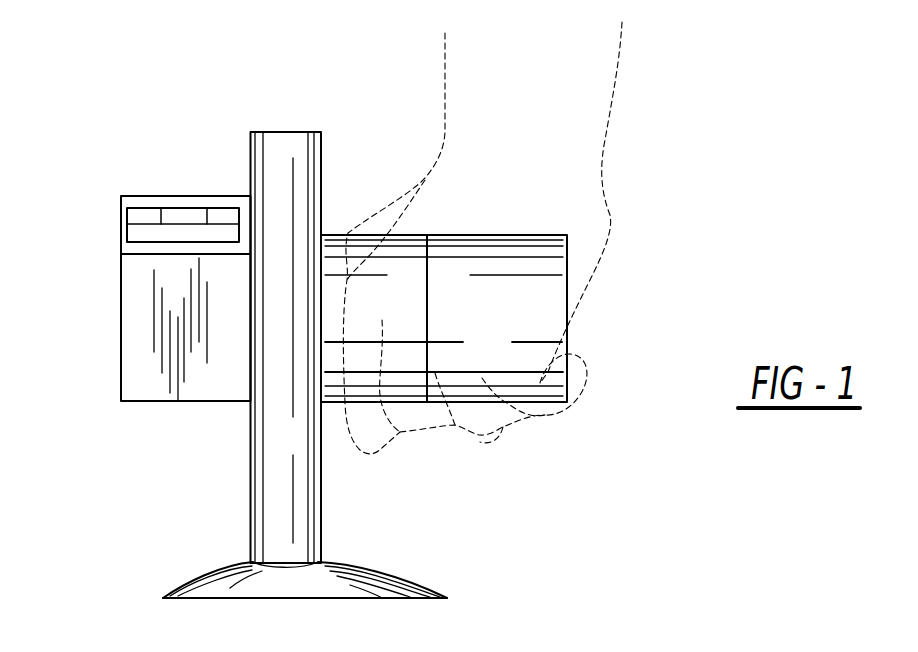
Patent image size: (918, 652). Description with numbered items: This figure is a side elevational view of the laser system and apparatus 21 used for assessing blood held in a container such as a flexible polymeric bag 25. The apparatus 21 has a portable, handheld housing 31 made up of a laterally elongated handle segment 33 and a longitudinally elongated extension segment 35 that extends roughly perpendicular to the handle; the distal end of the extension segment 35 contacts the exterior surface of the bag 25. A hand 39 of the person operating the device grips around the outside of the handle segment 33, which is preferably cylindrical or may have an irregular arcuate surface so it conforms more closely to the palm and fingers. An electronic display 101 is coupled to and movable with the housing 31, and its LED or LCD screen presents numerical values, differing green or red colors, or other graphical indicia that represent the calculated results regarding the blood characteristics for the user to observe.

The laser system and apparatus 21 is at (132, 122).
The electronic display 101 is at (127, 235).
The housing 31 is at (192, 258).
The handle segment 33 is at (509, 311).
The extension segment 35 is at (281, 481).
The flexible polymeric bag 25 is at (393, 572).
The hand 39 is at (493, 433).